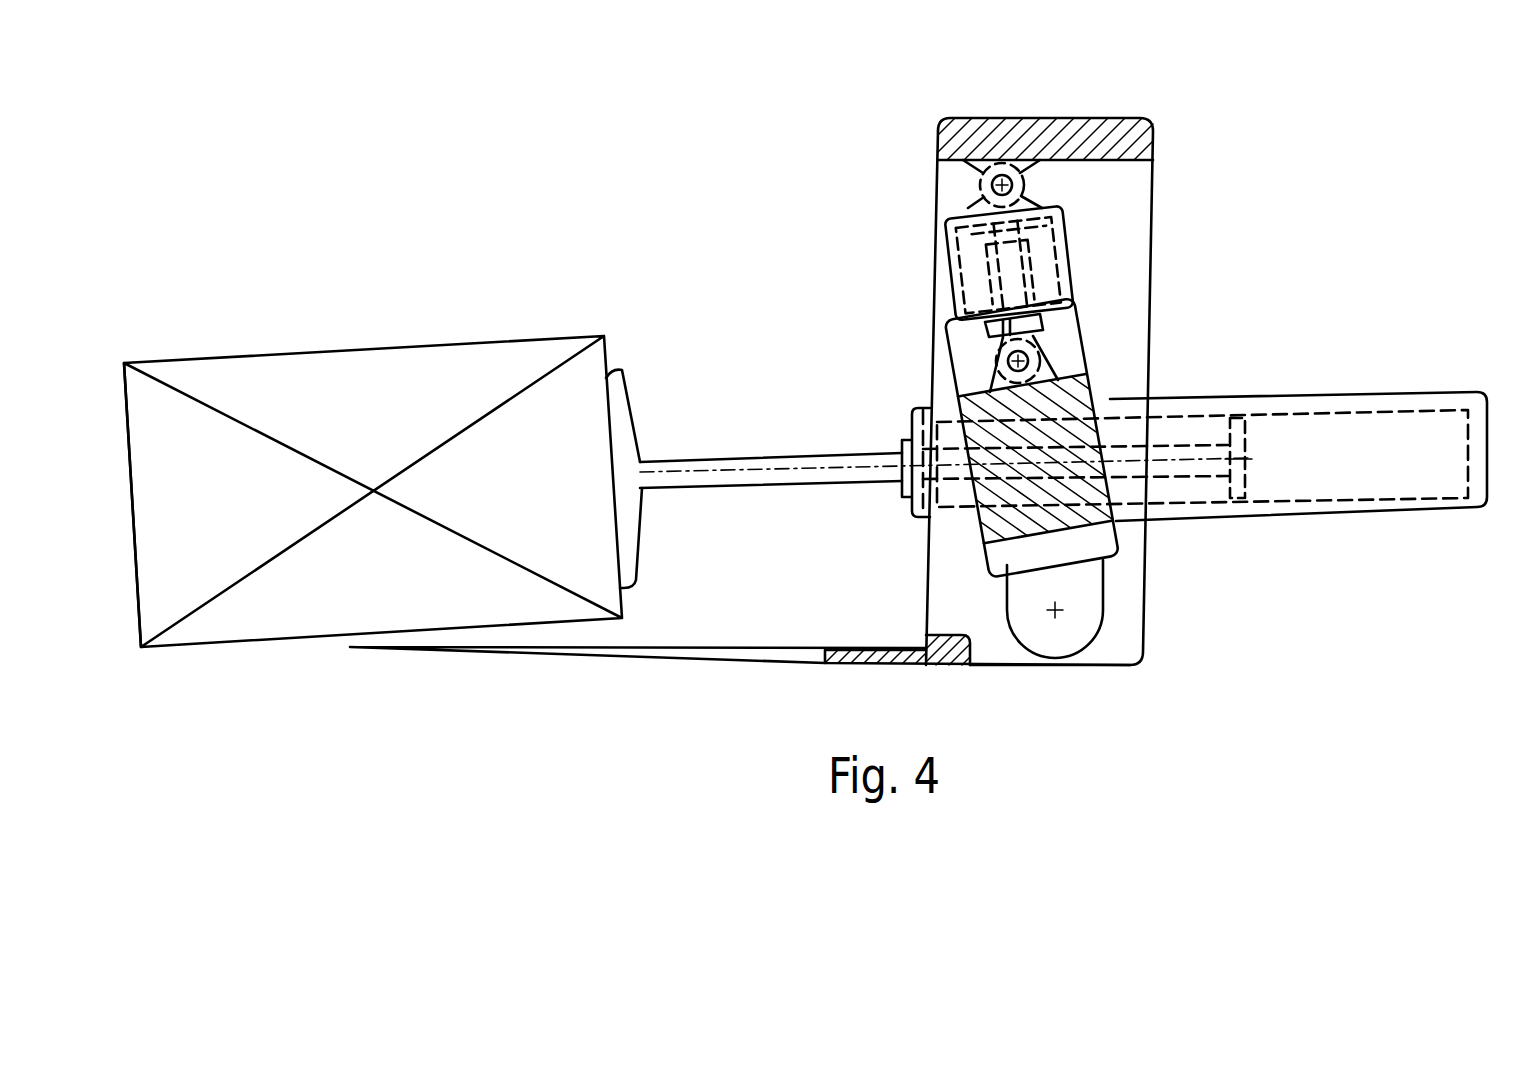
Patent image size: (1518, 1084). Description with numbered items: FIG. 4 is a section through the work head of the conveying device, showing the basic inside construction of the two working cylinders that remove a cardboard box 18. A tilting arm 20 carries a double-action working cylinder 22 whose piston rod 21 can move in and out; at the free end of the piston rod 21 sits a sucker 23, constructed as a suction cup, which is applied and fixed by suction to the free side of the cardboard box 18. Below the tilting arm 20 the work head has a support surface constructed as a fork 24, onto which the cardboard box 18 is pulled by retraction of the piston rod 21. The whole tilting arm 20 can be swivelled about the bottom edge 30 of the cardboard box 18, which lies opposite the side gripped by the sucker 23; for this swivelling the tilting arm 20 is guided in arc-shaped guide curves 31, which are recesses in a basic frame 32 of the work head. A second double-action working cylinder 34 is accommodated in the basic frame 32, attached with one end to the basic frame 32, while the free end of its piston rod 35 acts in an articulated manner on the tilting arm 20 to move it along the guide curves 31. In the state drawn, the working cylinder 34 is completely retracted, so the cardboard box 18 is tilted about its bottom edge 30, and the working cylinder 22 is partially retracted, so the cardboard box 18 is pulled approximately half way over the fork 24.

The cardboard box 18 is at (368, 388).
The tilting arm 20 is at (1166, 396).
The piston rod 21 is at (768, 473).
The double-action working cylinder 22 is at (1240, 430).
The sucker 23 is at (627, 397).
The fork 24 is at (590, 653).
The bottom edge 30 is at (141, 650).
The guide curve 31 is at (1073, 590).
The basic frame 32 is at (1130, 138).
The double-action working cylinder 34 is at (1038, 253).
The piston rod 35 is at (1010, 285).